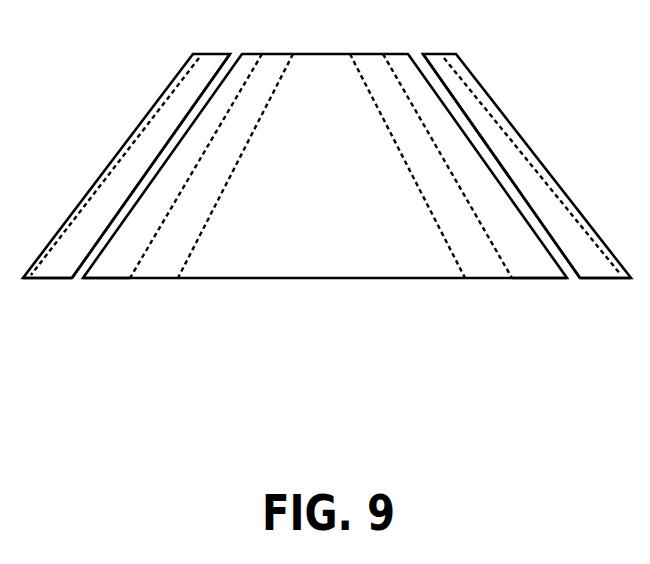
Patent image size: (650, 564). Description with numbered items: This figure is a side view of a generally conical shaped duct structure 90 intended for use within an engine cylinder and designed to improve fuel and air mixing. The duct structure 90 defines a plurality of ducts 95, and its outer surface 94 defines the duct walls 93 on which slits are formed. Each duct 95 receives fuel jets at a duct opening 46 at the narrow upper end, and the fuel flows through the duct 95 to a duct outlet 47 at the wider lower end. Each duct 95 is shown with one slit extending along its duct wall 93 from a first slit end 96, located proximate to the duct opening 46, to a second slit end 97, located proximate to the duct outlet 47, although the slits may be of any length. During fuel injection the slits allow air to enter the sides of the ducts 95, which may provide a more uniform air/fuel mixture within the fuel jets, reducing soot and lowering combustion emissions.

The duct structure 90 is at (360, 63).
The outer surface 94 is at (402, 238).
The duct opening 46 is at (214, 54).
The duct outlet 47 is at (127, 279).
The flap edge 93 is at (167, 130).
The duct 95 is at (112, 197).
The first slit end 96 is at (230, 54).
The second slit end 97 is at (77, 279).